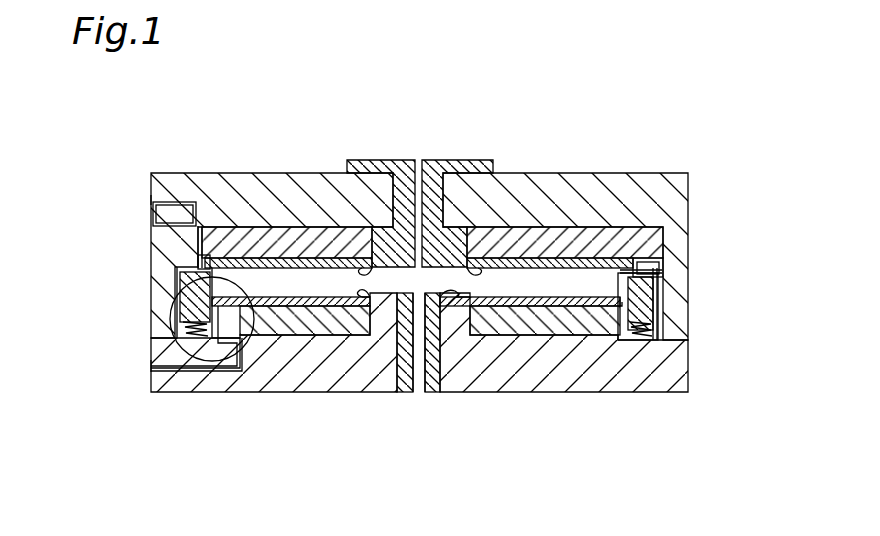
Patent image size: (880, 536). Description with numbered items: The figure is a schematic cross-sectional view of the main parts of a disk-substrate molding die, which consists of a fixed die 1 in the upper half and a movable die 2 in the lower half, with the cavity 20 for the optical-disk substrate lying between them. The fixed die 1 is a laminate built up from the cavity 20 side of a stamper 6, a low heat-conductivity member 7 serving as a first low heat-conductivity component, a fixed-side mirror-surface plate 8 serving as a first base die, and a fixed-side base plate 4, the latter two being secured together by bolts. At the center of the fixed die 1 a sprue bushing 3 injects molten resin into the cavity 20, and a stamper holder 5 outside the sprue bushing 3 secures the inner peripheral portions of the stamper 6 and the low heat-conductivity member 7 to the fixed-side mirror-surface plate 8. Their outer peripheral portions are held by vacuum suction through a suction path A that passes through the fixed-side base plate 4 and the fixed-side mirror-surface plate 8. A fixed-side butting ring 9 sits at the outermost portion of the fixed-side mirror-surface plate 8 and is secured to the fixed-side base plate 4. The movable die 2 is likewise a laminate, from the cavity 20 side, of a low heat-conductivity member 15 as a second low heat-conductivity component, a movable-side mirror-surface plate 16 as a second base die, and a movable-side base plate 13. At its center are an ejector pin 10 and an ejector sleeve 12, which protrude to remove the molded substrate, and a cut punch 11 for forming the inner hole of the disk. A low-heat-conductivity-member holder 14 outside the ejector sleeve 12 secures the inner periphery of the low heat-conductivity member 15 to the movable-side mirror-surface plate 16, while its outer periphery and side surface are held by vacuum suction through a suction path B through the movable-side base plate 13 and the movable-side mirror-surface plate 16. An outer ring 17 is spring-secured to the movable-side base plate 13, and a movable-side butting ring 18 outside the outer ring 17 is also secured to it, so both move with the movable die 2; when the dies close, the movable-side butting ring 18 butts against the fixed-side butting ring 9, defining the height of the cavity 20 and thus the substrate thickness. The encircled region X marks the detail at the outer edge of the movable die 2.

The fixed die 1 is at (716, 170).
The movable die 2 is at (716, 263).
The sprue bushing 3 is at (462, 163).
The fixed-side base plate 4 is at (570, 197).
The stamper holder 5 is at (462, 240).
The stamper 6 is at (218, 265).
The low heat-conductivity member 7 is at (207, 268).
The fixed-side mirror-surface plate 8 is at (320, 242).
The fixed-side butting ring 9 is at (152, 235).
The ejector pin 10 is at (419, 393).
The cut punch 11 is at (432, 395).
The ejector sleeve 12 is at (447, 340).
The movable-side base plate 13 is at (572, 365).
The low-heat-conductivity-member holder 14 is at (388, 305).
The low heat-conductivity member 15 is at (297, 330).
The movable-side mirror-surface plate 16 is at (243, 347).
The outer ring 17 is at (650, 318).
The movable-side butting ring 18 is at (183, 300).
The cavity 20 is at (583, 283).
The suction path A is at (150, 198).
The suction path B is at (178, 350).
The detail region X is at (180, 353).